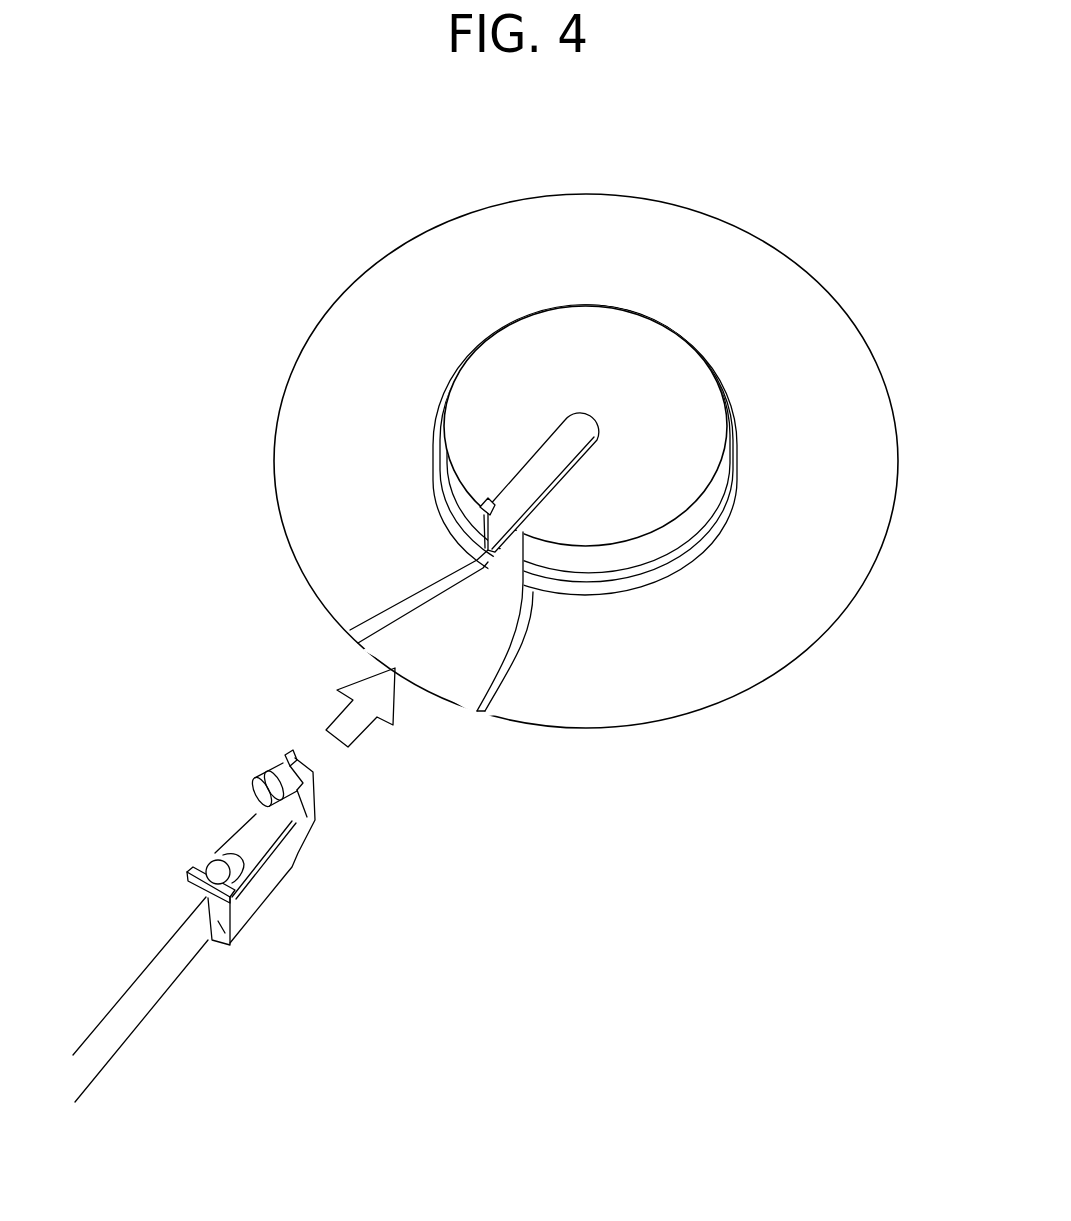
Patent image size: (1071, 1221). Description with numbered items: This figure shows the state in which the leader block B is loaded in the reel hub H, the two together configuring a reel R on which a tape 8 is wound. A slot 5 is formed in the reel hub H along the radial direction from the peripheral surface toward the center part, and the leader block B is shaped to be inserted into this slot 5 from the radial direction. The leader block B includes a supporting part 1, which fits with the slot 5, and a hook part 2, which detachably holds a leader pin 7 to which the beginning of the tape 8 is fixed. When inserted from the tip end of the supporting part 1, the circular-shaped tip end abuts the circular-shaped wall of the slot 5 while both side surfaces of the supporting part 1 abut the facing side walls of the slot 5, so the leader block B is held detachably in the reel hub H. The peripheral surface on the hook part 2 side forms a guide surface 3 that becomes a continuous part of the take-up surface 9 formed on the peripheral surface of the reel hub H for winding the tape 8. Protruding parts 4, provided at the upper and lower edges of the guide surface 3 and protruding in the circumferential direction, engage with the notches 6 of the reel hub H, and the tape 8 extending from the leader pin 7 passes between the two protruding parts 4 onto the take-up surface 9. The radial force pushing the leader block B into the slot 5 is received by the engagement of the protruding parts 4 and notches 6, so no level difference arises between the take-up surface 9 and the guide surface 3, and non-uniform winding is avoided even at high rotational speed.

The supporting part 1 is at (313, 762).
The hook part 2 is at (258, 885).
The guide surface 3 is at (232, 943).
The protruding parts 4 is at (192, 870).
The slot 5 is at (575, 481).
The notches 6 is at (480, 504).
The leader pin 7 is at (215, 858).
The tape 8 is at (158, 970).
The take-up surface 9 is at (477, 528).
The leader block B is at (294, 869).
The reel hub H is at (636, 345).
The reel R is at (813, 255).